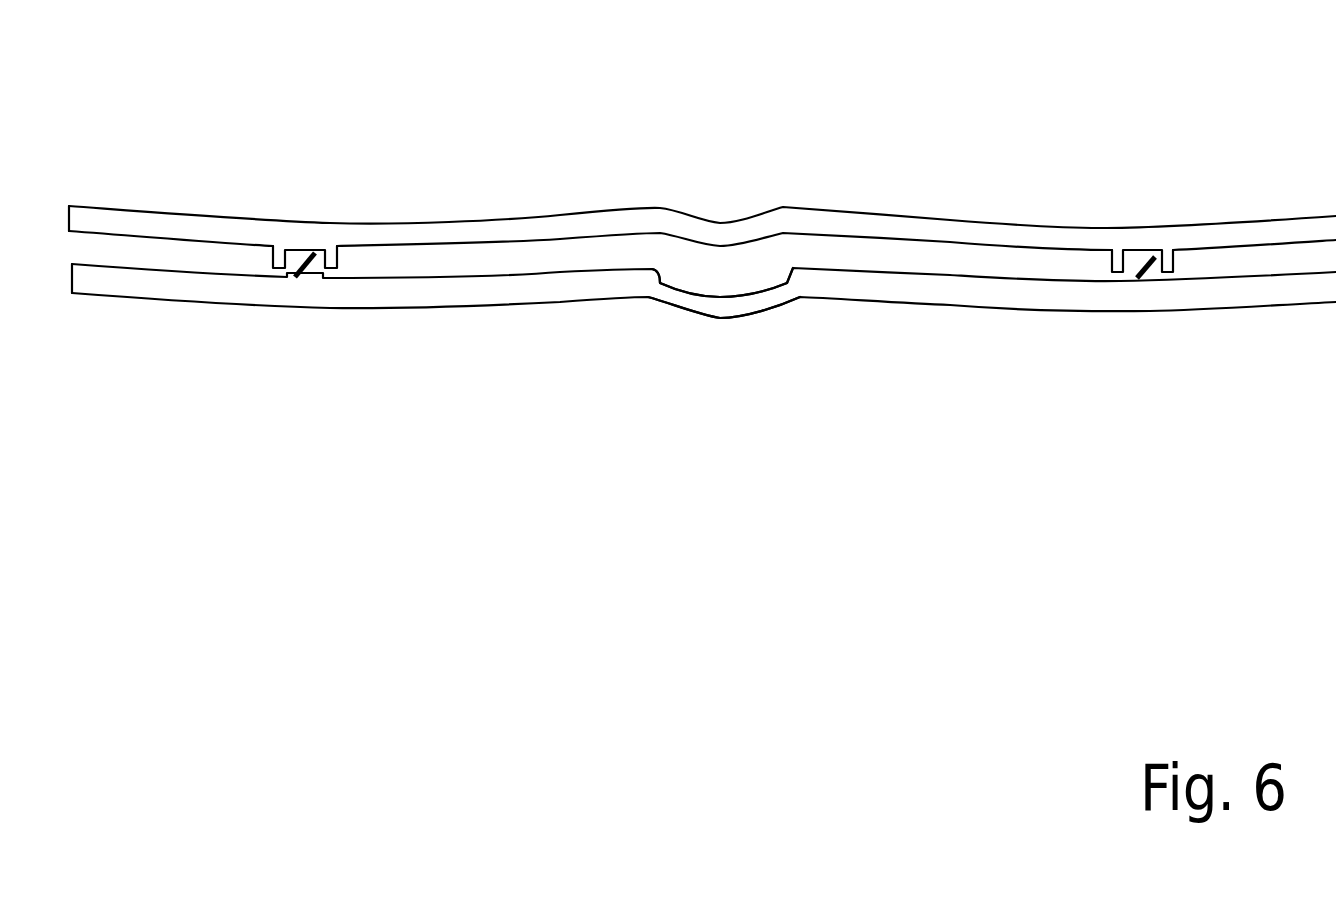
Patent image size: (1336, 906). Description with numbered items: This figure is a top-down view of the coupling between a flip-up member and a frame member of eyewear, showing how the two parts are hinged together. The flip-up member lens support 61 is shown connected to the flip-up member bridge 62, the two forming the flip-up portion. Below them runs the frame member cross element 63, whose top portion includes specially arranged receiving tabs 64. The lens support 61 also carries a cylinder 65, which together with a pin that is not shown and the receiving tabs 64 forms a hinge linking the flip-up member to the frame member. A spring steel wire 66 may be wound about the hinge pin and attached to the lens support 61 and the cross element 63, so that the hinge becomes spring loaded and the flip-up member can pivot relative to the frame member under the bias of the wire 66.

The flip-up member lens support 61 is at (518, 292).
The flip-up member bridge 62 is at (717, 308).
The frame member cross element 63 is at (457, 233).
The receiving tabs 64 is at (288, 246).
The cylinder 65 is at (313, 272).
The spring steel wire 66 is at (1143, 262).